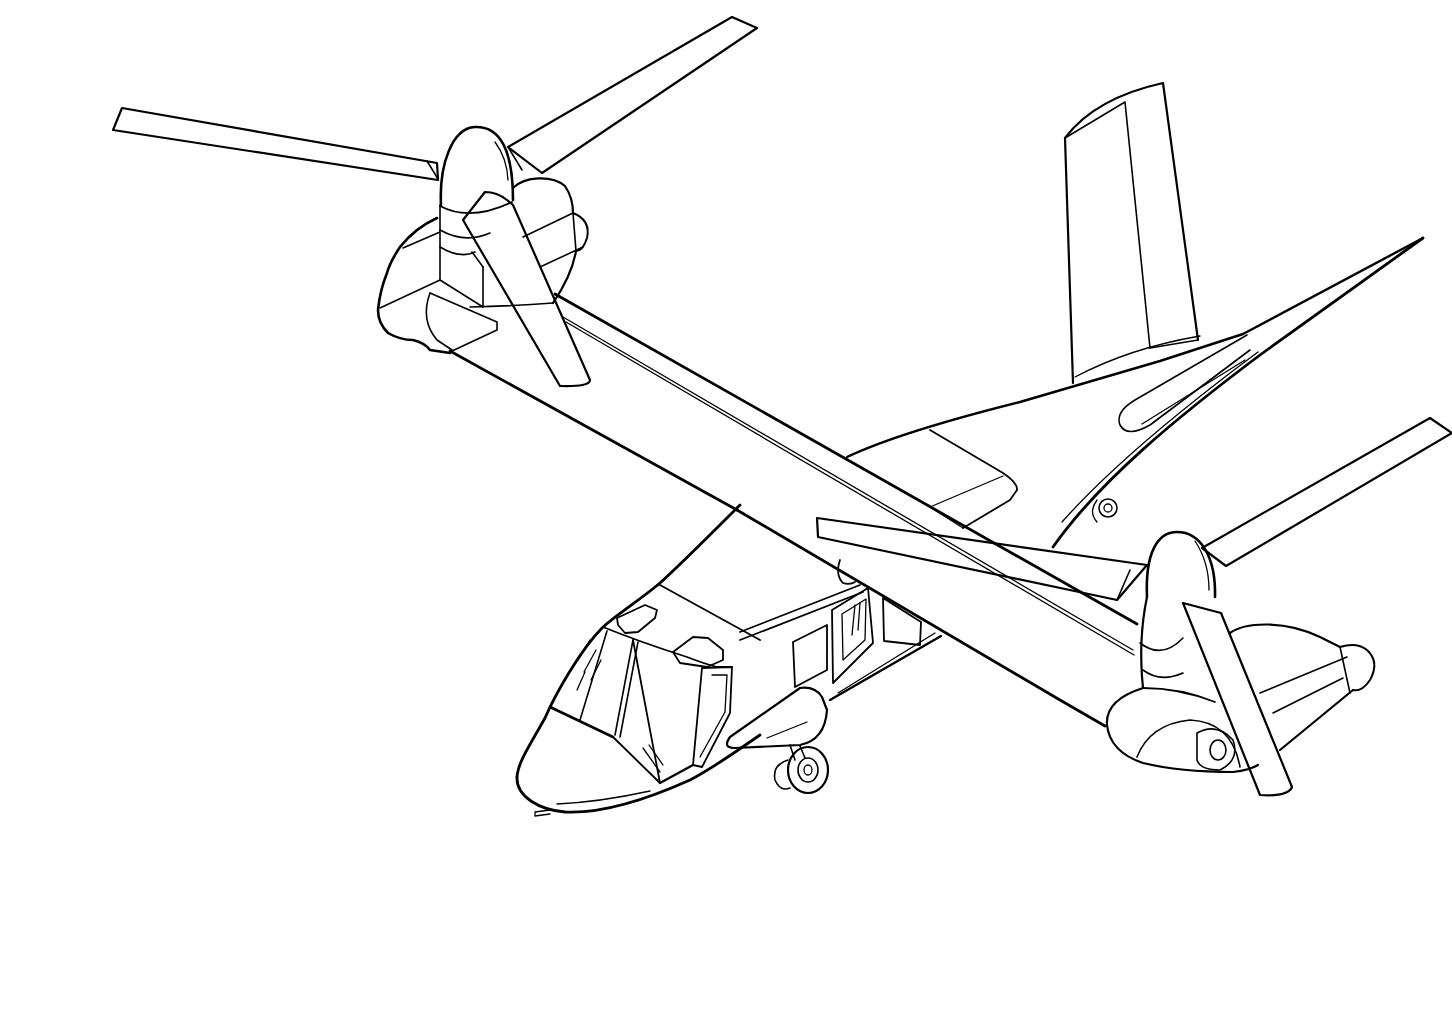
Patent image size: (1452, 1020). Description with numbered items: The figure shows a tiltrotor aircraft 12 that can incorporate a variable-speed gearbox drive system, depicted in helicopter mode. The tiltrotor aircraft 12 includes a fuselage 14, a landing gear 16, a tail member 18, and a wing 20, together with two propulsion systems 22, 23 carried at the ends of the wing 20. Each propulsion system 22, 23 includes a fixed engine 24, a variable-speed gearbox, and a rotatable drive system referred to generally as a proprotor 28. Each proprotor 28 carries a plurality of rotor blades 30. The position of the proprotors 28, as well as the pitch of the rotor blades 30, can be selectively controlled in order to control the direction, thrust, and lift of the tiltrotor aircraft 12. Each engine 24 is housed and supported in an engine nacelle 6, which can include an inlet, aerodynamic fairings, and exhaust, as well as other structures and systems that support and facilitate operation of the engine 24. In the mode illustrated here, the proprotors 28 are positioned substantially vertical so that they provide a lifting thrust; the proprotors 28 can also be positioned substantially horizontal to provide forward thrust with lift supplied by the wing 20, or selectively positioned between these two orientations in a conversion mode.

The tiltrotor aircraft 12 is at (1258, 63).
The fuselage 14 is at (601, 808).
The landing gear 16 is at (812, 789).
The tail member 18 is at (1181, 190).
The wing 20 is at (1003, 677).
The propulsion system 22 is at (1131, 808).
The propulsion system 23 is at (349, 232).
The fixed engine 24 is at (571, 197).
The proprotor 28 is at (474, 127).
The rotor blades 30 is at (618, 81).
The engine nacelle 6 is at (1313, 728).